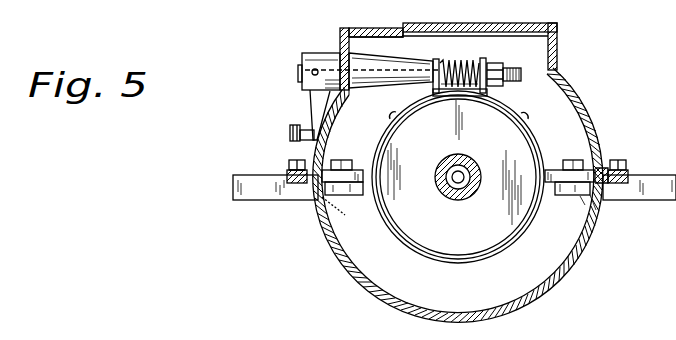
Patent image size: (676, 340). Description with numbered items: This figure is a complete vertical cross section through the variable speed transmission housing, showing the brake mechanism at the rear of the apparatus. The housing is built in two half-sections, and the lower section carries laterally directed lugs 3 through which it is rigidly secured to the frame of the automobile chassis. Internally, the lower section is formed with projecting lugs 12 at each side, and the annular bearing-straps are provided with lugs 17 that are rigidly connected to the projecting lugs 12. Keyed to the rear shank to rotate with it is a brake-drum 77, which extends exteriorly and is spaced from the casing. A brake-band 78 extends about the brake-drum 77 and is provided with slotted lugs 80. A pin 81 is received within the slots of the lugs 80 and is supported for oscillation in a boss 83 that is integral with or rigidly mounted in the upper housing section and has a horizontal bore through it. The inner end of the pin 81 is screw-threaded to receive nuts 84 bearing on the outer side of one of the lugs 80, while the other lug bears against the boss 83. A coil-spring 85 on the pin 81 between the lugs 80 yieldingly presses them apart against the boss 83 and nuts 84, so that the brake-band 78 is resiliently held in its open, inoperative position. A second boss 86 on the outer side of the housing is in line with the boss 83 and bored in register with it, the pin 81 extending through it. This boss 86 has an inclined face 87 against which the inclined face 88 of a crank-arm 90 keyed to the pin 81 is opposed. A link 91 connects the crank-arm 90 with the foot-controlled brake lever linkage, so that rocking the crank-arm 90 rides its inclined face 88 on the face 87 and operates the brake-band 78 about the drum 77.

The lugs 3 is at (661, 194).
The projecting lugs 12 is at (340, 212).
The lugs 17 is at (340, 204).
The brake-drum 77 is at (508, 222).
The brake-band 78 is at (508, 243).
The slotted lugs 80 is at (529, 121).
The pin 81 is at (504, 72).
The boss 83 is at (384, 86).
The nuts 84 is at (494, 64).
The coil-spring 85 is at (462, 62).
The boss 86 is at (333, 56).
The inclined face 87 is at (345, 69).
The inclined face 88 is at (345, 70).
The crank-arm 90 is at (309, 107).
The link 91 is at (293, 138).